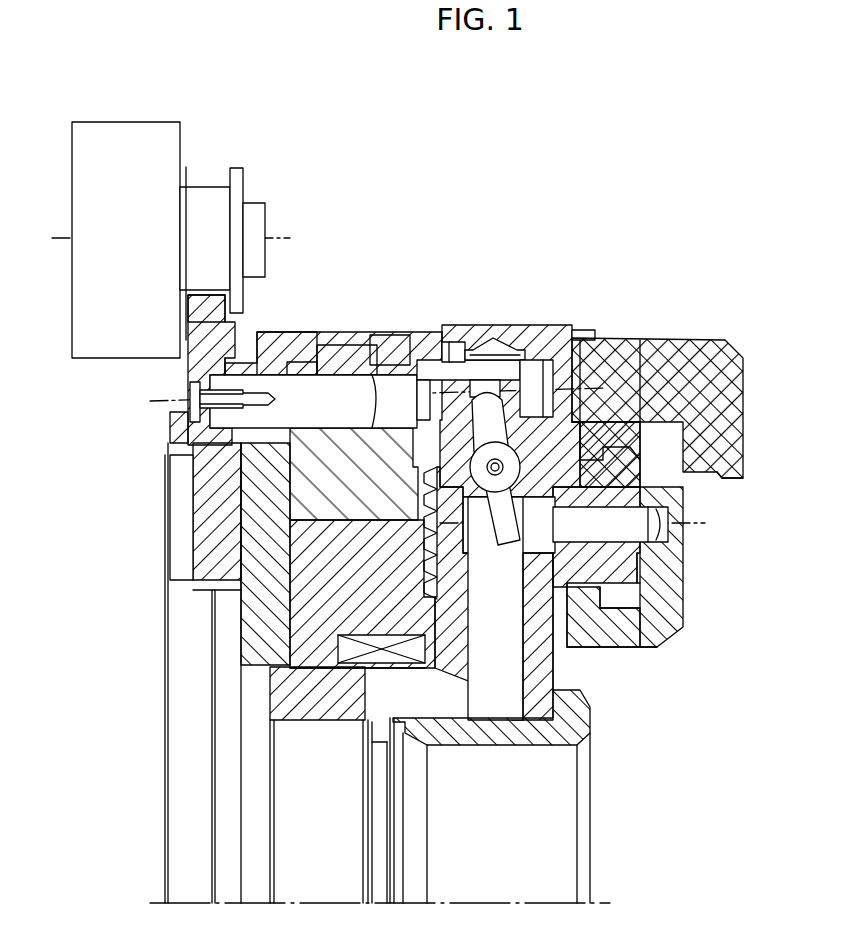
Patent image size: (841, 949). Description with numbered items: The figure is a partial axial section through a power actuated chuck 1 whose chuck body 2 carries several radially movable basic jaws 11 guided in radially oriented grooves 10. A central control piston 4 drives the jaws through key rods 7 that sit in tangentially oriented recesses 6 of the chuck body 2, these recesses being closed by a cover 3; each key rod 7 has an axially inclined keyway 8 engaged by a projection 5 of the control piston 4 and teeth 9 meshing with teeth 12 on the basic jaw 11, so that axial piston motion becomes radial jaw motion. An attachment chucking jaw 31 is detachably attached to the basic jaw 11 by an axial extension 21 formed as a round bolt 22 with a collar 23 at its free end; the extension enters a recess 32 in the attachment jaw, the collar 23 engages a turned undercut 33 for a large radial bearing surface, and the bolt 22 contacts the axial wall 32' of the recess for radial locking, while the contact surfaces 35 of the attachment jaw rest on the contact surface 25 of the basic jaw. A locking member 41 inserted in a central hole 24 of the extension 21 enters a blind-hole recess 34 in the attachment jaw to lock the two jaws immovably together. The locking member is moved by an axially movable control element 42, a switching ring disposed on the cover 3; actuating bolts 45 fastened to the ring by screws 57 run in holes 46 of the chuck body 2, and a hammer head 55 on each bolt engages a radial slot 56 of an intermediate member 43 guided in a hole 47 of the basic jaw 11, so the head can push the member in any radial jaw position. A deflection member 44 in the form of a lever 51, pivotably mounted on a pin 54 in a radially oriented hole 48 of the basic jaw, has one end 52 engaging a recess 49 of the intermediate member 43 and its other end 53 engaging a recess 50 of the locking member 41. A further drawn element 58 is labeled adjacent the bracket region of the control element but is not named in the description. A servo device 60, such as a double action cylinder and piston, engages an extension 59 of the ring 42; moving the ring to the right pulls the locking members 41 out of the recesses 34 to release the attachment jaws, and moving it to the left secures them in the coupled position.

The power actuated chuck 1 is at (575, 196).
The chuck body 2 is at (372, 345).
The cover 3 is at (303, 342).
The control piston 4 is at (297, 693).
The projections 5 is at (383, 655).
The recesses 6 is at (240, 543).
The key rods 7 is at (303, 595).
The keyway 8 is at (302, 647).
The teeth 9 is at (318, 667).
The grooves 10 is at (583, 460).
The basic jaws 11 is at (543, 336).
The teeth 12 is at (446, 650).
The axial extension 21 is at (706, 345).
The bolt 22 is at (615, 435).
The collar 23 is at (672, 637).
The hole 24 is at (668, 600).
The contact surface 25 is at (586, 330).
The attachment chucking jaw 31 is at (722, 479).
The recess 32 is at (678, 334).
The axial wall 32' is at (629, 645).
The undercut 33 is at (630, 650).
The recess 34 is at (645, 532).
The contact surfaces 35 is at (565, 590).
The locking member 41 is at (662, 548).
The control element 42 is at (188, 337).
The intermediate member 43 is at (447, 352).
The deflection member 44 is at (500, 400).
The actuating bolt 45 is at (333, 390).
The hole 46 is at (380, 352).
The hole 47 is at (540, 362).
The hole 48 is at (475, 650).
The recess 49 is at (490, 380).
The recess 50 is at (590, 705).
The lever 51 is at (455, 446).
The end 52 is at (470, 380).
The end 53 is at (527, 630).
The pin 54 is at (498, 660).
The hammer head 55 is at (418, 420).
The radial slot 56 is at (387, 388).
The screws 57 is at (193, 389).
The bracket flange 58 is at (197, 362).
The extension 59 is at (212, 305).
The servo device 60 is at (207, 182).